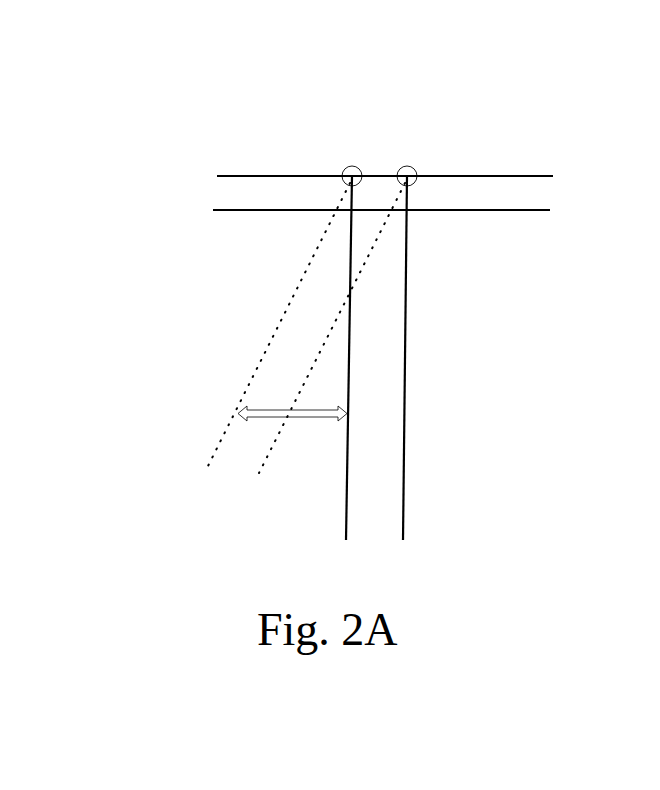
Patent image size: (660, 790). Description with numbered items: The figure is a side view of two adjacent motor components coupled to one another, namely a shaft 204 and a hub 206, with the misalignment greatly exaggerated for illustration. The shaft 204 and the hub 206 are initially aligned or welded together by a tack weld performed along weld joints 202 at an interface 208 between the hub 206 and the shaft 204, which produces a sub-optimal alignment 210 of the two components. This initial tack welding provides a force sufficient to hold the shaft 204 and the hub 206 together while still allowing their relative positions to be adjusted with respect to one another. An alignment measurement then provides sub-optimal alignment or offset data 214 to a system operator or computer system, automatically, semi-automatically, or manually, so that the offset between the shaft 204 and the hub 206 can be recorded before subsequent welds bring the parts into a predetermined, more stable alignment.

The weld joint 202 is at (345, 170).
The shaft 204 is at (388, 361).
The hub 206 is at (480, 190).
The interface 208 is at (377, 175).
The sub-optimal alignment 210 is at (300, 323).
The offset data 214 is at (312, 415).